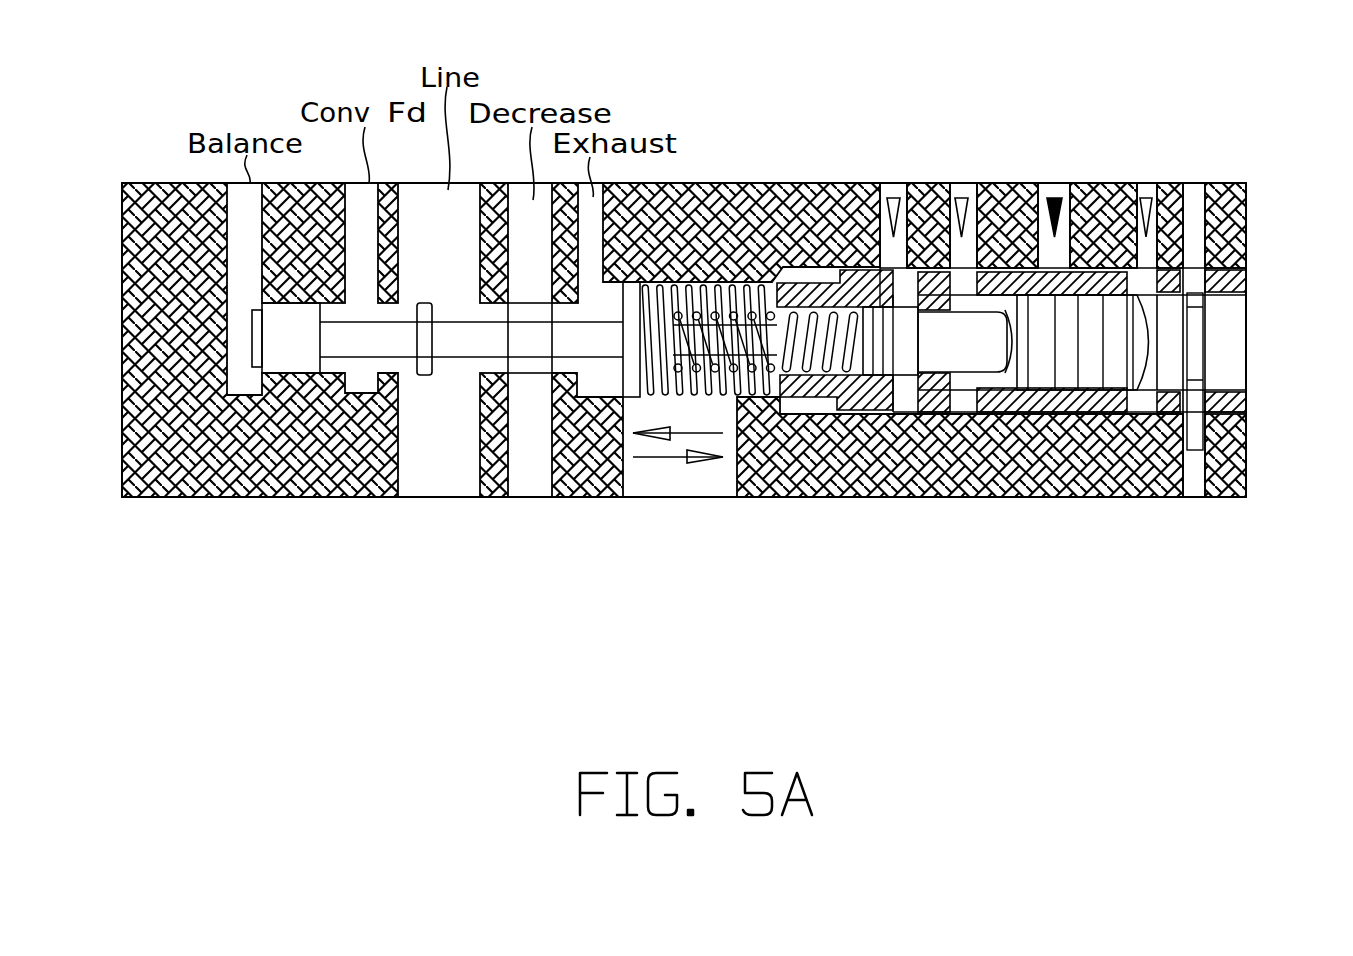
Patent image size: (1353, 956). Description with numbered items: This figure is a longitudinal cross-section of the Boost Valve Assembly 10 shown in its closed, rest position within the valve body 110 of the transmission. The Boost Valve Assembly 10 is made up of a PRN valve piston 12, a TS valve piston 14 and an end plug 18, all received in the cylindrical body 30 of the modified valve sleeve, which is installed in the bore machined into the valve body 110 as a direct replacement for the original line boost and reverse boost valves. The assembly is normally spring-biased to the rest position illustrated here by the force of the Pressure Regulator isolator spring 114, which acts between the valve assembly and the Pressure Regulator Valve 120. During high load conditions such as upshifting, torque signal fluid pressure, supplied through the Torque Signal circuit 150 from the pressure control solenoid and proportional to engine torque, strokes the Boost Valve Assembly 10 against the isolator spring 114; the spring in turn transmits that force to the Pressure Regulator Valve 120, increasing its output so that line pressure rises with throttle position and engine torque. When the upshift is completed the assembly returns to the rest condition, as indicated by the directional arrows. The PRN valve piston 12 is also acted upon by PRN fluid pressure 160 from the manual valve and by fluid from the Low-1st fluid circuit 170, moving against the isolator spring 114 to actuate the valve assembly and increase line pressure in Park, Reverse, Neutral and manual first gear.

The Boost Valve Assembly 10 is at (1054, 198).
The PRN valve piston 12 is at (975, 355).
The TS valve piston 14 is at (1093, 355).
The end plug 18 is at (1230, 367).
The cylindrical body 30 is at (1247, 287).
The valve body 110 is at (1003, 497).
The Pressure Regulator isolator spring 114 is at (807, 375).
The Pressure Regulator Valve 120 is at (610, 355).
The Torque Signal circuit 150 is at (1146, 198).
The PRN fluid pressure 160 is at (894, 198).
The Low-1st fluid circuit 170 is at (963, 198).